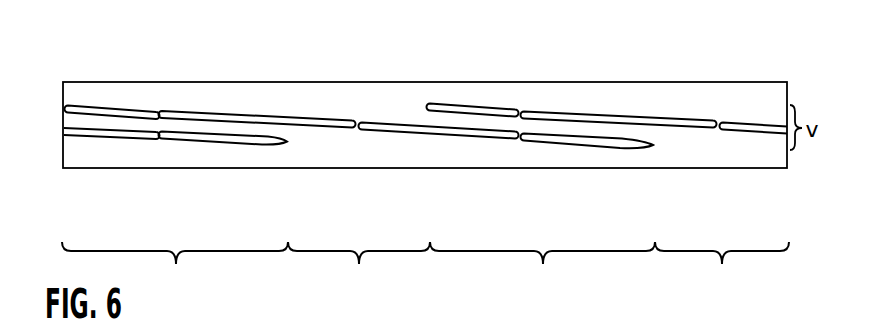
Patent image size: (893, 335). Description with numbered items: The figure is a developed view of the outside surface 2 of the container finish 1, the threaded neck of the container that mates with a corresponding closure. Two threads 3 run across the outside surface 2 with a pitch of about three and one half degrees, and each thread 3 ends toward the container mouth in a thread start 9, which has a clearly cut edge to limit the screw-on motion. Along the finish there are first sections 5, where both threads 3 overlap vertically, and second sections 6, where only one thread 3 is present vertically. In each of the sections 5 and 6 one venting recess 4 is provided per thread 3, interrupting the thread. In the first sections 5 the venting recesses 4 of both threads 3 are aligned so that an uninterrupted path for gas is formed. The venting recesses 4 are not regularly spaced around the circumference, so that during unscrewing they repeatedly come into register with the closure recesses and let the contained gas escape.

The container finish 1 is at (322, 74).
The outside surface 2 is at (602, 98).
The thread 3 is at (204, 146).
The venting recess 4 is at (158, 112).
The first section 5 is at (358, 272).
The second section 6 is at (538, 272).
The thread start 9 is at (68, 103).